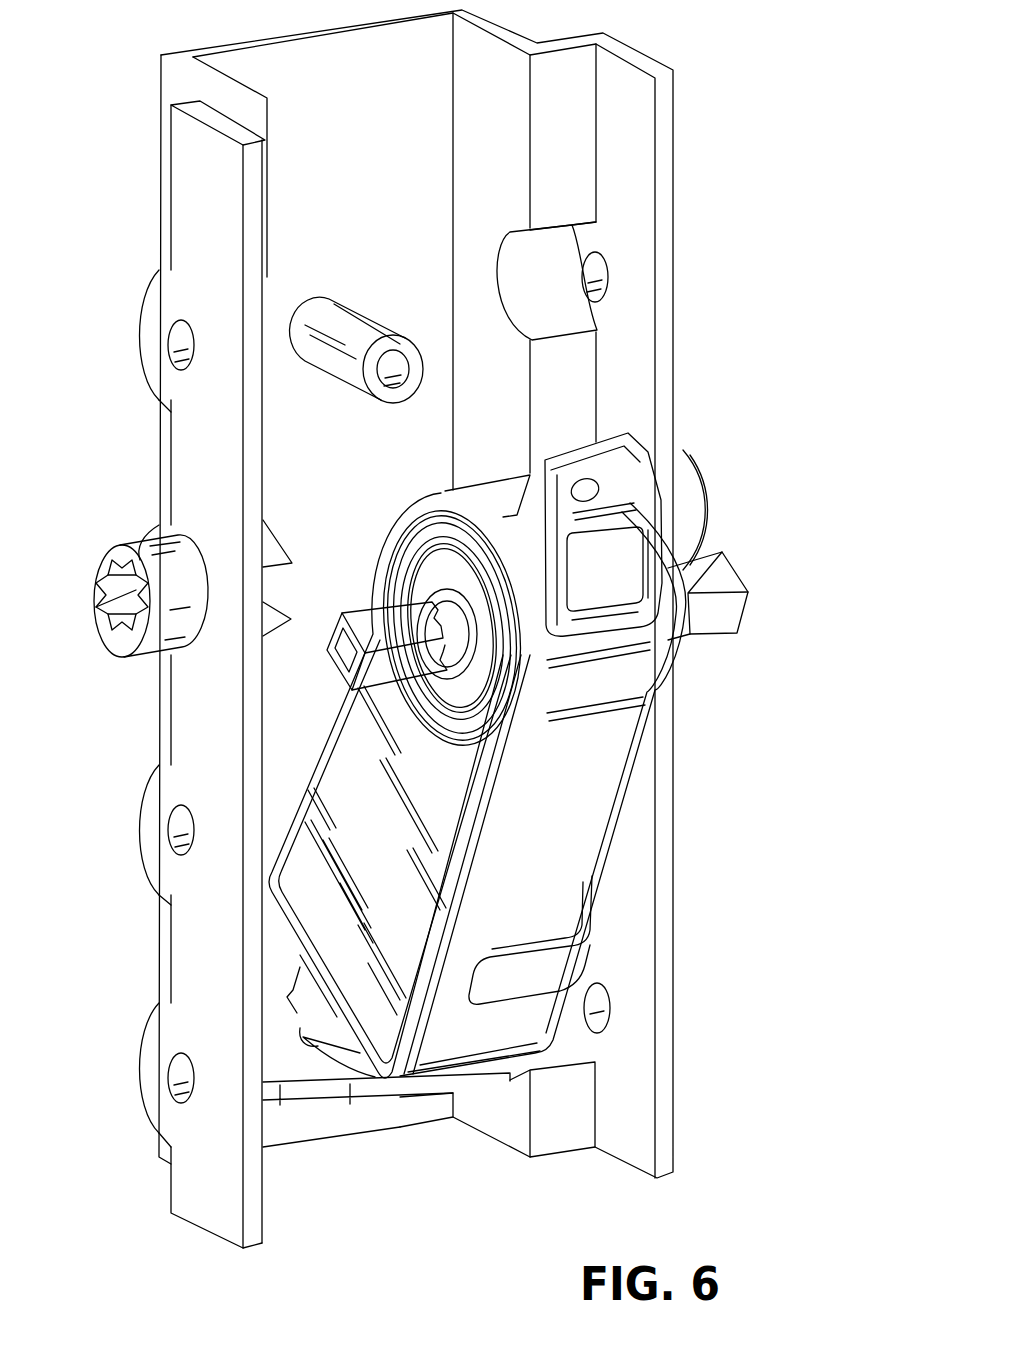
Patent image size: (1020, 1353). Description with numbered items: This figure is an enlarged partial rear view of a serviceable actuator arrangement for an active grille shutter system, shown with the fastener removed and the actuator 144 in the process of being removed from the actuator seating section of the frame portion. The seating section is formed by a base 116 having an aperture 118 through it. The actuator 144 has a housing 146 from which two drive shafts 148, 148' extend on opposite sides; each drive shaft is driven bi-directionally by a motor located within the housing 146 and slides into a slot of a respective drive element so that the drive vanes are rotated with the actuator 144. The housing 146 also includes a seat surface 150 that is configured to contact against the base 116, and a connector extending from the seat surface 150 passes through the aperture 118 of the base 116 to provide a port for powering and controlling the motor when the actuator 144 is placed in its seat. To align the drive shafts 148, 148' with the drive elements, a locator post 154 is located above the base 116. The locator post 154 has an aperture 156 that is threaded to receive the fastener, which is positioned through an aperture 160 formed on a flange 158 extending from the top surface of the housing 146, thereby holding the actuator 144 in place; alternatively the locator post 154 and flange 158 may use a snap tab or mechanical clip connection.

The base 116 is at (292, 1072).
The aperture 118 is at (298, 1027).
The actuator 144 is at (712, 668).
The housing 146 is at (597, 805).
The drive shaft 148 is at (398, 607).
The drive shaft 148' is at (737, 557).
The seat surface 150 is at (290, 939).
The locator post 154 is at (340, 332).
The aperture 156 is at (383, 358).
The flange 158 is at (622, 475).
The aperture 160 is at (590, 481).